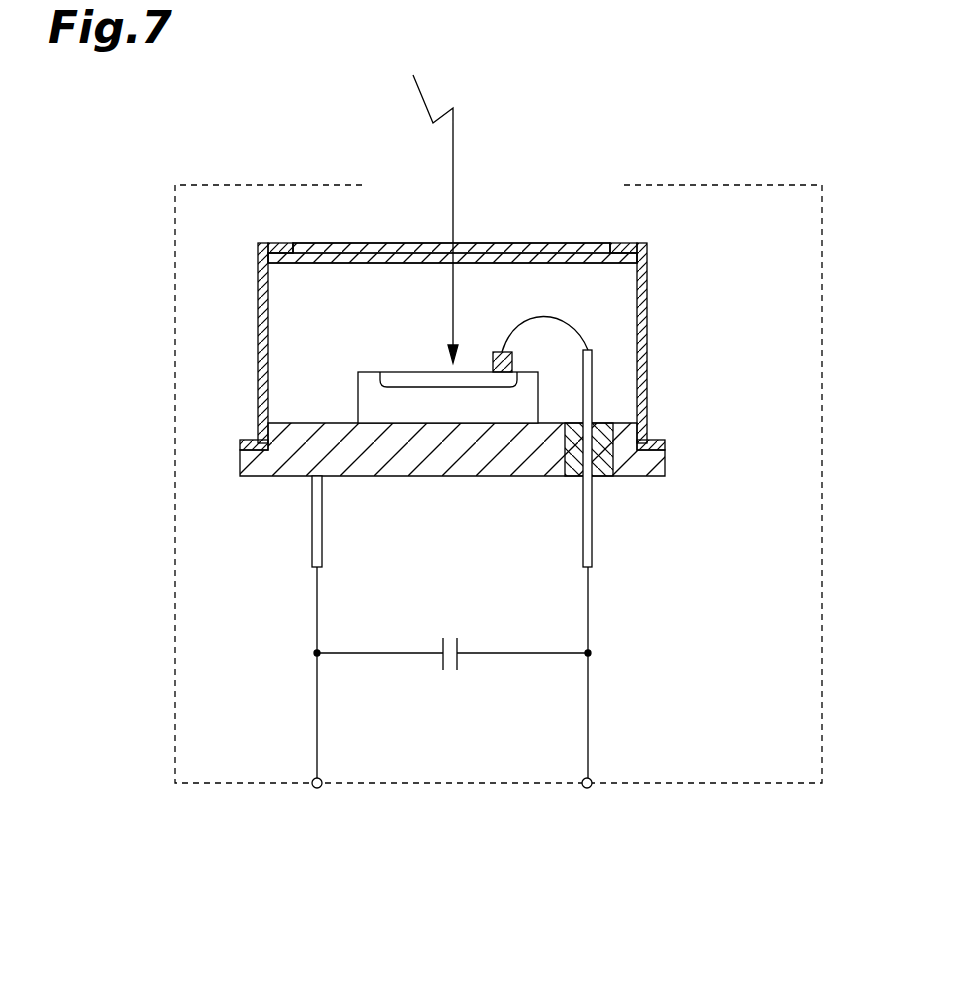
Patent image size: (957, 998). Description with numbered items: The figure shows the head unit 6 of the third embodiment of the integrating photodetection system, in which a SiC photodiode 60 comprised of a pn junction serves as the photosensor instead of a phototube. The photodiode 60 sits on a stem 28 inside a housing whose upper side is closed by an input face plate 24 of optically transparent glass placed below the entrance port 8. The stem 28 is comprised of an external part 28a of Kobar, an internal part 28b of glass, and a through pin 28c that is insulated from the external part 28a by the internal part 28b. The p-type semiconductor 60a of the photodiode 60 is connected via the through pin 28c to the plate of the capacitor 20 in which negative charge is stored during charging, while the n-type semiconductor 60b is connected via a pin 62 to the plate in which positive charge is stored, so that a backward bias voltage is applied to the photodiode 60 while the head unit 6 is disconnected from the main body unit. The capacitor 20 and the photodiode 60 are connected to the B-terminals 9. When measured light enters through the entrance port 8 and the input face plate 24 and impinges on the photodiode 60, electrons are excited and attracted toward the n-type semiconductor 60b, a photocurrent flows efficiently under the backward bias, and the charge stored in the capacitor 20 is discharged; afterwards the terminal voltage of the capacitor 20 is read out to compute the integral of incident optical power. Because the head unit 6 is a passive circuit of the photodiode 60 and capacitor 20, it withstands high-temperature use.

The head unit 6 is at (824, 385).
The entrance port 8 is at (573, 181).
The B-terminals 9 is at (593, 810).
The capacitor 20 is at (462, 640).
The input face plate 24 is at (556, 243).
The stem 28 is at (510, 478).
The external part 28a is at (653, 480).
The internal part 28b is at (599, 481).
The through pin 28c is at (725, 508).
The SiC photodiode 60 is at (397, 369).
The p-type semiconductor 60a is at (392, 372).
The n-type semiconductor 60b is at (370, 407).
The pin 62 is at (312, 553).